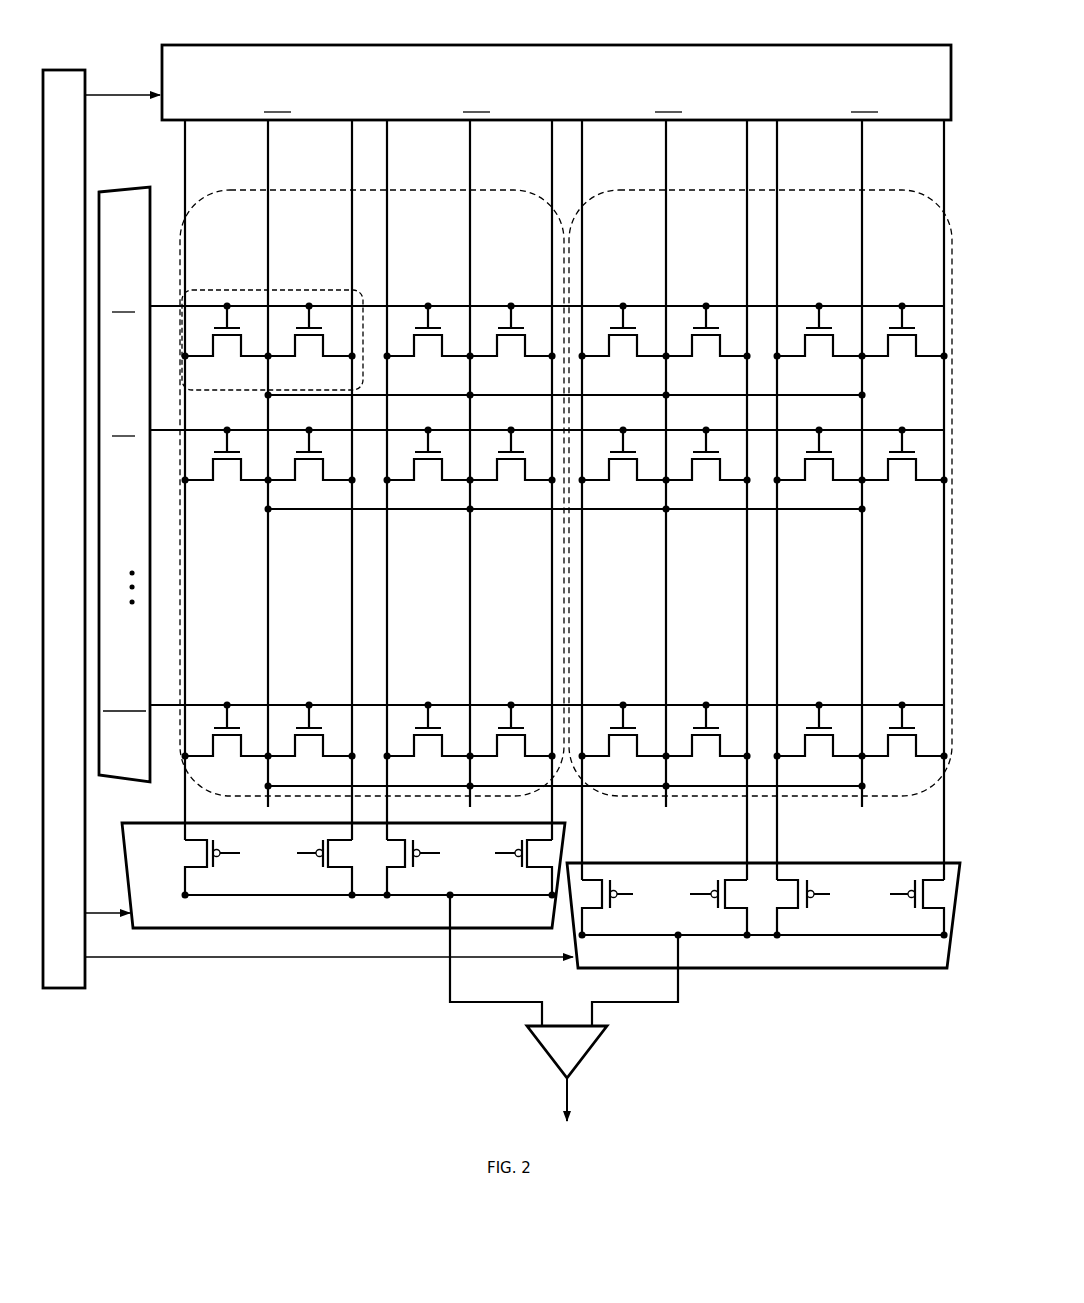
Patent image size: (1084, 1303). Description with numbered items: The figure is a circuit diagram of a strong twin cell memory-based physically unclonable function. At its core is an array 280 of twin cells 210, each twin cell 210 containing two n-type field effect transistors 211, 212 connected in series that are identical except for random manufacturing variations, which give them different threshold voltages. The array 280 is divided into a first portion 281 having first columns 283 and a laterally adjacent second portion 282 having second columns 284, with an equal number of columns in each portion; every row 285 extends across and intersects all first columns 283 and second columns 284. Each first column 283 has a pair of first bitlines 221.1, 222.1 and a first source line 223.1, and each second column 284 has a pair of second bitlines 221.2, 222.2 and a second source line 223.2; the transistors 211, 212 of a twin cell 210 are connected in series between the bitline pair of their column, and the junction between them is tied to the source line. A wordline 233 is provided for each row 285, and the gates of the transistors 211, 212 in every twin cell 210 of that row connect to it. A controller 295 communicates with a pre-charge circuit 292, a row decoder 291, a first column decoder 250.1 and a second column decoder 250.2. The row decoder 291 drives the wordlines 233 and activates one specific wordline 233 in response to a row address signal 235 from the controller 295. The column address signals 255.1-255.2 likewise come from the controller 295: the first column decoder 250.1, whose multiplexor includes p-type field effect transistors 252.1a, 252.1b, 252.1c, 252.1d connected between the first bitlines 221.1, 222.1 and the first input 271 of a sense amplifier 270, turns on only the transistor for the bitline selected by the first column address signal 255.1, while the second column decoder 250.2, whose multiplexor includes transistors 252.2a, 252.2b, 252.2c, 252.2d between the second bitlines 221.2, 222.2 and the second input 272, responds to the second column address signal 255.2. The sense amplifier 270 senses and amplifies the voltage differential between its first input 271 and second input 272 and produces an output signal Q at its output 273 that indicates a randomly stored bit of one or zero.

The controller 295 is at (65, 66).
The column address signals 255.1-255.2 is at (115, 93).
The pre-charge circuit 292 is at (758, 100).
The first columns 283 is at (278, 81).
The second columns 284 is at (669, 81).
The row decoder 291 is at (140, 241).
The rows 285 is at (131, 328).
The row address signal 235 is at (96, 519).
The array 280 is at (170, 192).
The first portion 281 is at (423, 189).
The second portion 282 is at (694, 188).
The first bitline 221.1 is at (185, 247).
The first bitline 222.1 is at (352, 235).
The first source line 223.1 is at (268, 278).
The second bitline 221.2 is at (582, 248).
The second bitline 222.2 is at (747, 240).
The second source line 223.2 is at (666, 286).
The wordline 233 is at (158, 305).
The twin cell 210 is at (225, 285).
The n-type field effect transistor 211 is at (228, 354).
The n-type field effect transistor 212 is at (310, 354).
The first column decoder 250.1 is at (125, 877).
The second column decoder 250.2 is at (817, 970).
The first p-type field effect transistor 252.1a is at (193, 853).
The first p-type field effect transistor 252.1b is at (308, 849).
The first p-type field effect transistor 252.1c is at (422, 846).
The first p-type field effect transistor 252.1d is at (522, 876).
The second p-type field effect transistor 252.2a is at (612, 918).
The second p-type field effect transistor 252.2b is at (707, 884).
The second p-type field effect transistor 252.2c is at (822, 883).
The second p-type field effect transistor 252.2d is at (913, 915).
The first column address signal 255.1 is at (103, 915).
The second column address signal 255.2 is at (278, 960).
The first input 271 is at (540, 1022).
The second input 272 is at (590, 1022).
The sense amplifier 270 is at (581, 1055).
The output 273 is at (566, 1087).